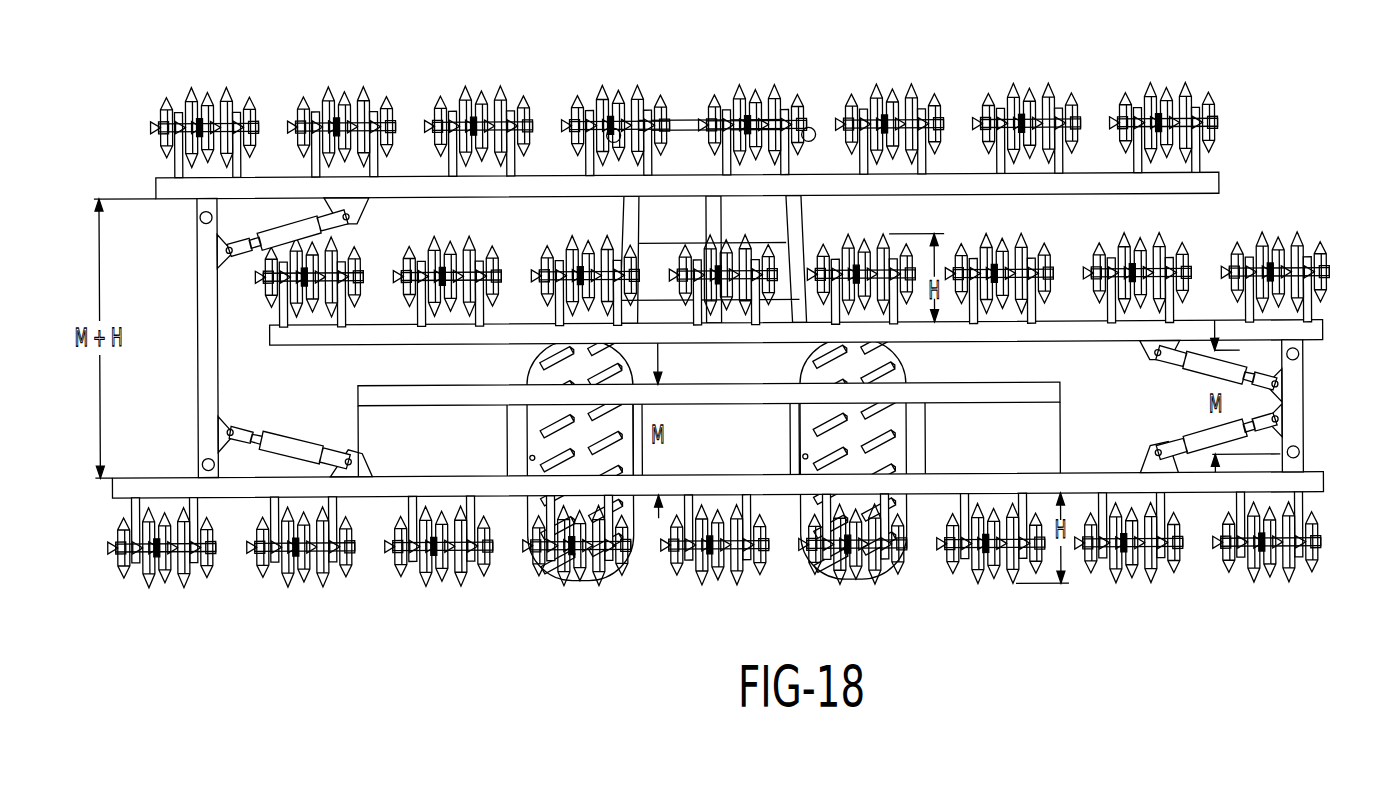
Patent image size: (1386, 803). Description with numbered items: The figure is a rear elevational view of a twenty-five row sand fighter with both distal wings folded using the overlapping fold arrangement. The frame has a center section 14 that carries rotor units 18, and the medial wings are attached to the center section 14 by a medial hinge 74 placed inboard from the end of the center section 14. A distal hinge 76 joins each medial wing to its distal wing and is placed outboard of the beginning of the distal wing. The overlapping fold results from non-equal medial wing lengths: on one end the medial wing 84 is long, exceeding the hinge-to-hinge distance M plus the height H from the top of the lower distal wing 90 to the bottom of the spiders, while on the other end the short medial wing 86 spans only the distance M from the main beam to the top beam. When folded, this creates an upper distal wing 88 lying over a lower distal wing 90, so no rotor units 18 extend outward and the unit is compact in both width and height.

The center section 14 is at (718, 539).
The rotor unit 18 is at (705, 563).
The medial hinge 74 is at (759, 474).
The distal hinge 76 is at (762, 293).
The medial wing 84 is at (252, 338).
The short medial wing 86 is at (1334, 405).
The upper distal wing 88 is at (687, 104).
The lower distal wing 90 is at (796, 357).